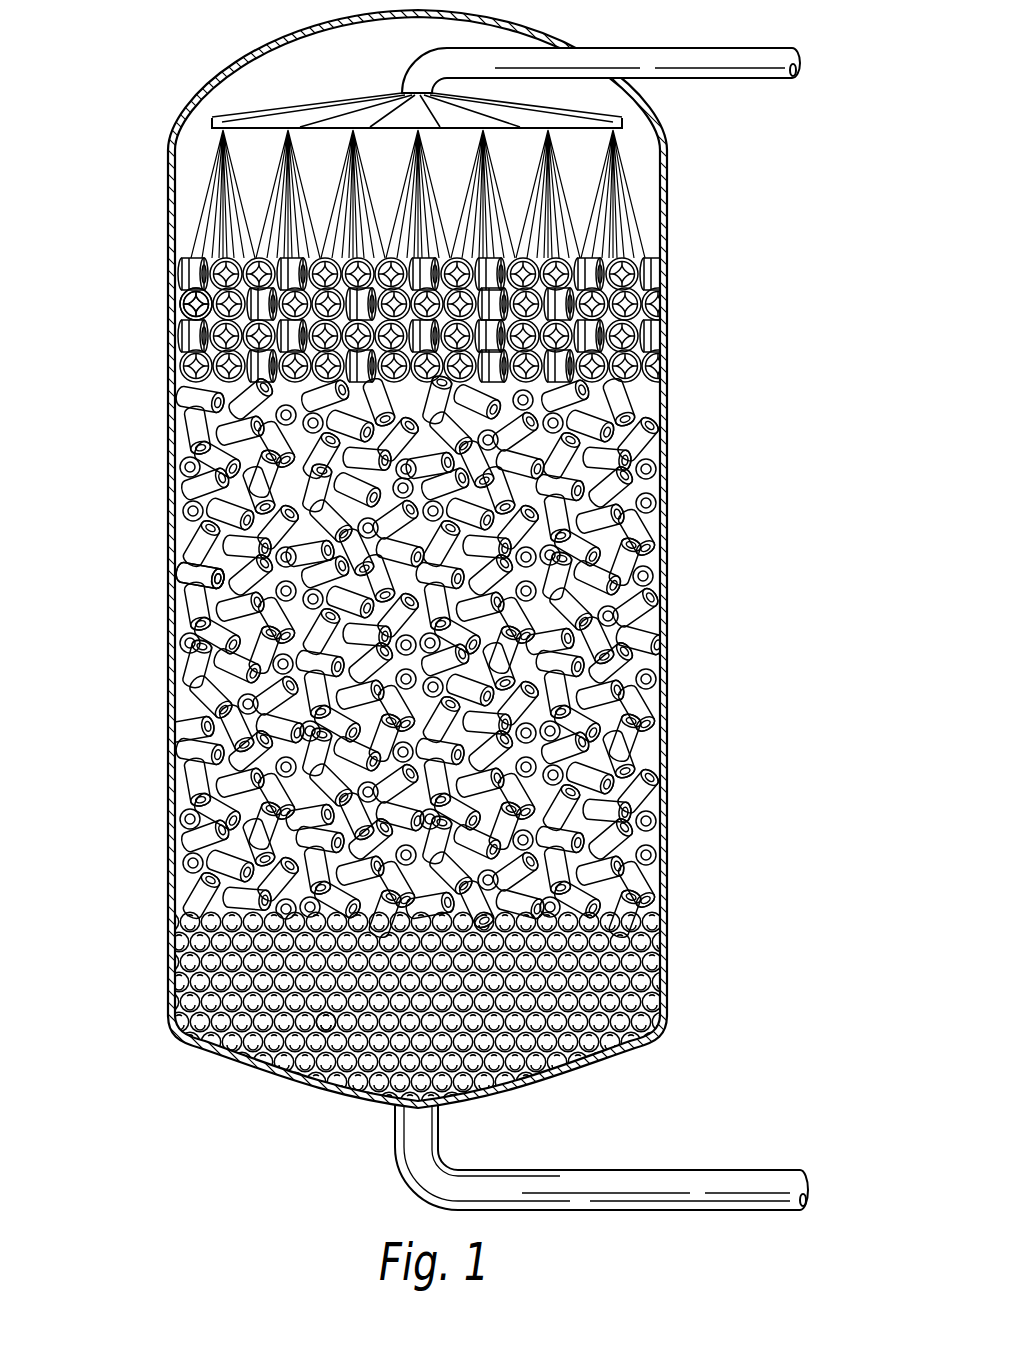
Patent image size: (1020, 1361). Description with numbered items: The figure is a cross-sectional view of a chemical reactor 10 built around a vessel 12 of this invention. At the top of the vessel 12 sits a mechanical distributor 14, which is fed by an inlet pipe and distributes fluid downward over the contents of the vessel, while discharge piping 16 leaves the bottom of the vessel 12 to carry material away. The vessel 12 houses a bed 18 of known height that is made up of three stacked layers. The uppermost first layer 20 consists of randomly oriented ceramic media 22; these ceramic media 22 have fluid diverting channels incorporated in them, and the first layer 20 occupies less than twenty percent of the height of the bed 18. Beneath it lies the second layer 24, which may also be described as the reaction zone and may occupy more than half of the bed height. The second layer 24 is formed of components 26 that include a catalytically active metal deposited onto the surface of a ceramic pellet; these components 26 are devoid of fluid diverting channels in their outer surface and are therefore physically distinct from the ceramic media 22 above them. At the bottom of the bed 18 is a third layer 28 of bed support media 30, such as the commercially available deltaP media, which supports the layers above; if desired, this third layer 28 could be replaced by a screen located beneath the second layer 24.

The chemical reactor 10 is at (150, 80).
The vessel 12 is at (168, 213).
The mechanical distributor 14 is at (310, 92).
The discharge piping 16 is at (745, 1173).
The bed 18 is at (397, 691).
The first layer 20 is at (430, 321).
The randomly oriented ceramic media 22 is at (182, 302).
The second layer 24 is at (431, 657).
The components 26 is at (205, 574).
The third layer 28 is at (459, 1018).
The bed support media 30 is at (263, 1068).